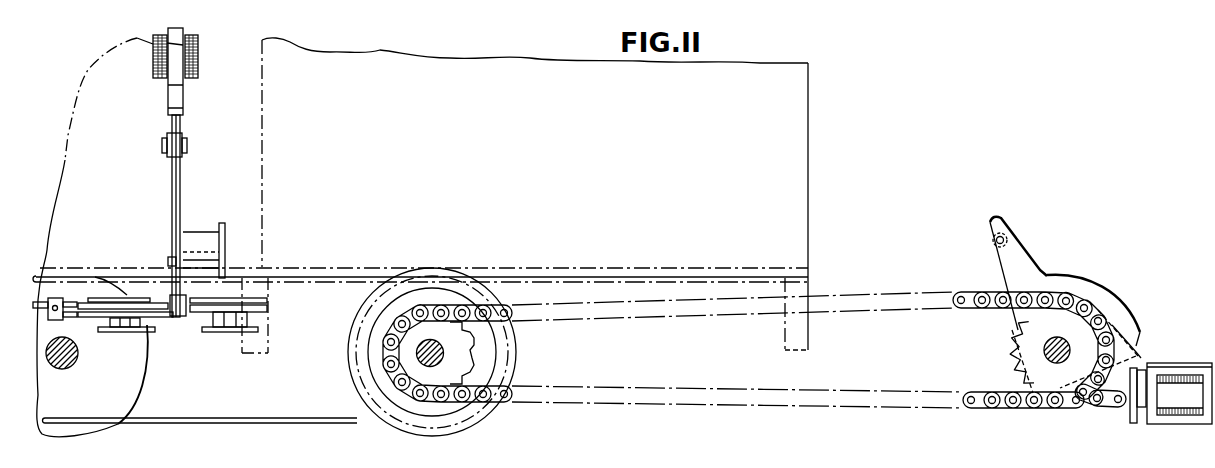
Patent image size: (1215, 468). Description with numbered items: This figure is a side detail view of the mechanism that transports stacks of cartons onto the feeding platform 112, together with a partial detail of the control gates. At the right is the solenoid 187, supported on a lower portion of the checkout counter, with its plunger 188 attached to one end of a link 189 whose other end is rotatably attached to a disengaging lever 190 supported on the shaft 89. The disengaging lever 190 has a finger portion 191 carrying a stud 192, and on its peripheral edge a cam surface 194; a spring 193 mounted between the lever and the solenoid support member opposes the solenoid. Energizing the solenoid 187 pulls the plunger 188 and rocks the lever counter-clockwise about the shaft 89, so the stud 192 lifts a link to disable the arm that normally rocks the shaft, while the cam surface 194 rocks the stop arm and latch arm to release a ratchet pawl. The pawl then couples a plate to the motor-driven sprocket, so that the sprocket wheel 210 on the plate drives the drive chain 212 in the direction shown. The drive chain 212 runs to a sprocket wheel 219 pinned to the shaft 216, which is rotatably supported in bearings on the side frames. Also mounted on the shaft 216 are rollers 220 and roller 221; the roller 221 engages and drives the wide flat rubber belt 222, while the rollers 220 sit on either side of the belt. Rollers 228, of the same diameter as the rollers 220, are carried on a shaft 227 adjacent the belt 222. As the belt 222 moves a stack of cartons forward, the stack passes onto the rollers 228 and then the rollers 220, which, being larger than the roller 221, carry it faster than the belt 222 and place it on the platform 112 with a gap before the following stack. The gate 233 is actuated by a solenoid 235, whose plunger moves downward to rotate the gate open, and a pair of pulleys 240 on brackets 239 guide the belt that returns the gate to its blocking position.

The shaft 89 is at (1045, 355).
The platform 112 is at (662, 268).
The solenoid 187 is at (1185, 424).
The plunger 188 is at (1134, 424).
The link 189 is at (1100, 408).
The disengaging lever 190 is at (1096, 283).
The finger portion 191 is at (1030, 251).
The stud 192 is at (1006, 234).
The spring 193 is at (1139, 357).
The cam surface 194 is at (1134, 328).
The sprocket wheel 210 is at (1012, 340).
The drive chain 212 is at (964, 292).
The shaft 216 is at (443, 355).
The sprocket wheel 219 is at (478, 335).
The rollers 220 is at (350, 382).
The roller 221 is at (362, 336).
The belt 222 is at (217, 423).
The shaft 227 is at (73, 367).
The rollers 228 is at (141, 393).
The gate 233 is at (183, 179).
The solenoid 235 is at (196, 47).
The brackets 239 is at (108, 333).
The pulleys 240 is at (243, 316).